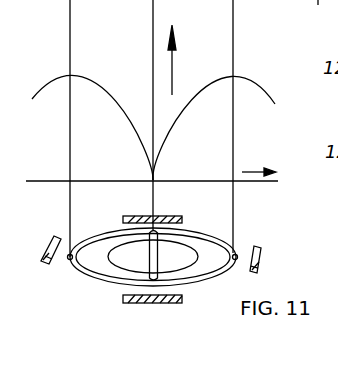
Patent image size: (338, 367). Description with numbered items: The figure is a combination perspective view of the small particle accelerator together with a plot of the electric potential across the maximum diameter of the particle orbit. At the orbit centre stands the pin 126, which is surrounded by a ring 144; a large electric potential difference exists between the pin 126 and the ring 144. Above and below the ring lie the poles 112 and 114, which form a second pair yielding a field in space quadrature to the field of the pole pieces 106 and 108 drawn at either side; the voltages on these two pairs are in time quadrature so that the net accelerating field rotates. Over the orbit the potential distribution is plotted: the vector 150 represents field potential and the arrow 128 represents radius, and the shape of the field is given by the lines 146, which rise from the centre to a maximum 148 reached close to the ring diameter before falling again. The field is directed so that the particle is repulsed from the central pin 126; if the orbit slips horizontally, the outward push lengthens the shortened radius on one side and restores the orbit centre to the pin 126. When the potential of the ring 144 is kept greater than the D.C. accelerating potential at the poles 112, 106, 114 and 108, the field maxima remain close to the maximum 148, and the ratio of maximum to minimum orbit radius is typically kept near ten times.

The pole piece 106 is at (44, 249).
The pole piece 108 is at (263, 262).
The pole 112 is at (157, 214).
The pole 114 is at (180, 303).
The pin 126 is at (163, 252).
The radius 128 is at (257, 172).
The ring 144 is at (84, 276).
The field lines 146 is at (131, 123).
The field maximum 148 is at (236, 75).
The field potential vector 150 is at (153, 57).